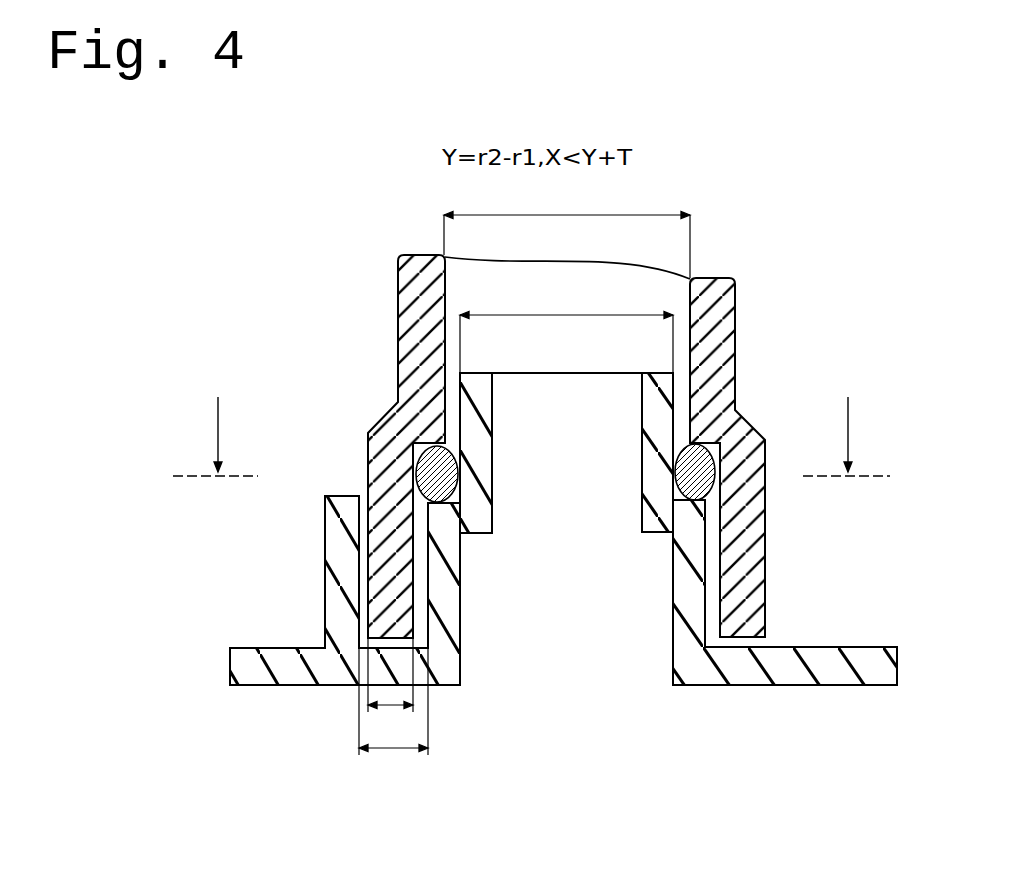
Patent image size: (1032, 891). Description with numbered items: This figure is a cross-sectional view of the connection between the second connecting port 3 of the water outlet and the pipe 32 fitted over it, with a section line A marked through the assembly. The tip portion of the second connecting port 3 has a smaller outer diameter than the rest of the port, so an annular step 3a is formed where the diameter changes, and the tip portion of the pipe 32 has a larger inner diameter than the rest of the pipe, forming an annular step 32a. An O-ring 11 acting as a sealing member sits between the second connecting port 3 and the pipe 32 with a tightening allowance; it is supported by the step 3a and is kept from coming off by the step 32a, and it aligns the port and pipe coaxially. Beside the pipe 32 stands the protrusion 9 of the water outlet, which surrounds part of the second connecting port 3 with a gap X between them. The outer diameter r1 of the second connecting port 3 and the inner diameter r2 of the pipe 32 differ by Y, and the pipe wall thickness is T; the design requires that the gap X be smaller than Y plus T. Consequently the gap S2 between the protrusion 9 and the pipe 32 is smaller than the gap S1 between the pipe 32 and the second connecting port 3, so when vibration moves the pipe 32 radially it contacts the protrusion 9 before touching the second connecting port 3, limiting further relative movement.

The second connecting port 3 is at (517, 410).
The step 3a is at (442, 503).
The protrusion 9 is at (325, 537).
The O-ring 11 is at (675, 476).
The pipe 32 is at (397, 322).
The step 32a is at (420, 443).
The gap S1 is at (420, 578).
The gap S2 is at (362, 522).
The wall thickness T is at (390, 685).
The gap X is at (393, 713).
The outer diameter r1 is at (566, 330).
The inner diameter r2 is at (567, 233).
The section line A- A is at (531, 423).